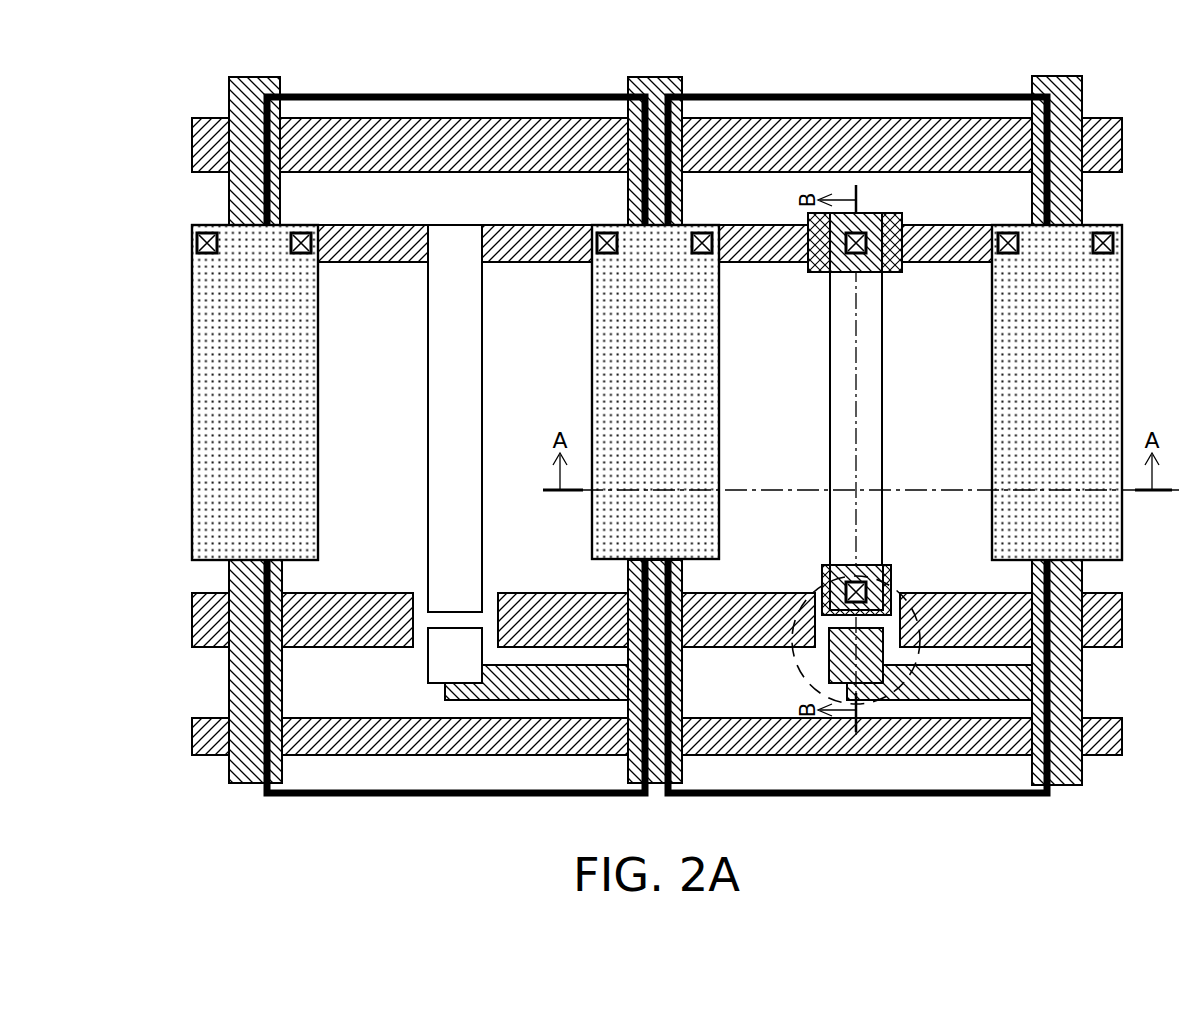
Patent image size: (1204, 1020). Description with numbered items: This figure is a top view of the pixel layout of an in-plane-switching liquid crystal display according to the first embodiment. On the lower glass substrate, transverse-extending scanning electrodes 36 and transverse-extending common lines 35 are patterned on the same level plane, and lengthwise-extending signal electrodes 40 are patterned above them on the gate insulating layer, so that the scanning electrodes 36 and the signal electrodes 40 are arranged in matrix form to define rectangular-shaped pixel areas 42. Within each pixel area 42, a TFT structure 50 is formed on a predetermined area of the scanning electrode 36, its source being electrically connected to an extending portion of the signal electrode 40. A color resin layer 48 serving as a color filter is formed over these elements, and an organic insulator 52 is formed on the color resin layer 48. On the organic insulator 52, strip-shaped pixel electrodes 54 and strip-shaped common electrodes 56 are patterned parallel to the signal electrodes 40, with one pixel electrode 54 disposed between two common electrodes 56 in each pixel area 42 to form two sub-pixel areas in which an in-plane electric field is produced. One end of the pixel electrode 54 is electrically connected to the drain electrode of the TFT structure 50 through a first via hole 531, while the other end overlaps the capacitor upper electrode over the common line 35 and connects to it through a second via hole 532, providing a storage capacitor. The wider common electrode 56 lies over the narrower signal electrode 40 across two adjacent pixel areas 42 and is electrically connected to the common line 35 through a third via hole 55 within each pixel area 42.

The common line 35 is at (925, 232).
The scanning electrode 36 is at (1115, 146).
The signal electrode 40 is at (229, 92).
The pixel area 42 is at (342, 318).
The color resin layer 48 is at (654, 458).
The organic insulator 52 is at (654, 458).
The TFT structure 50 is at (822, 582).
The pixel electrode 54 is at (478, 398).
The third via hole 55 is at (607, 235).
The common electrode 56 is at (305, 398).
The first via hole 531 is at (872, 573).
The second via hole 532 is at (878, 270).